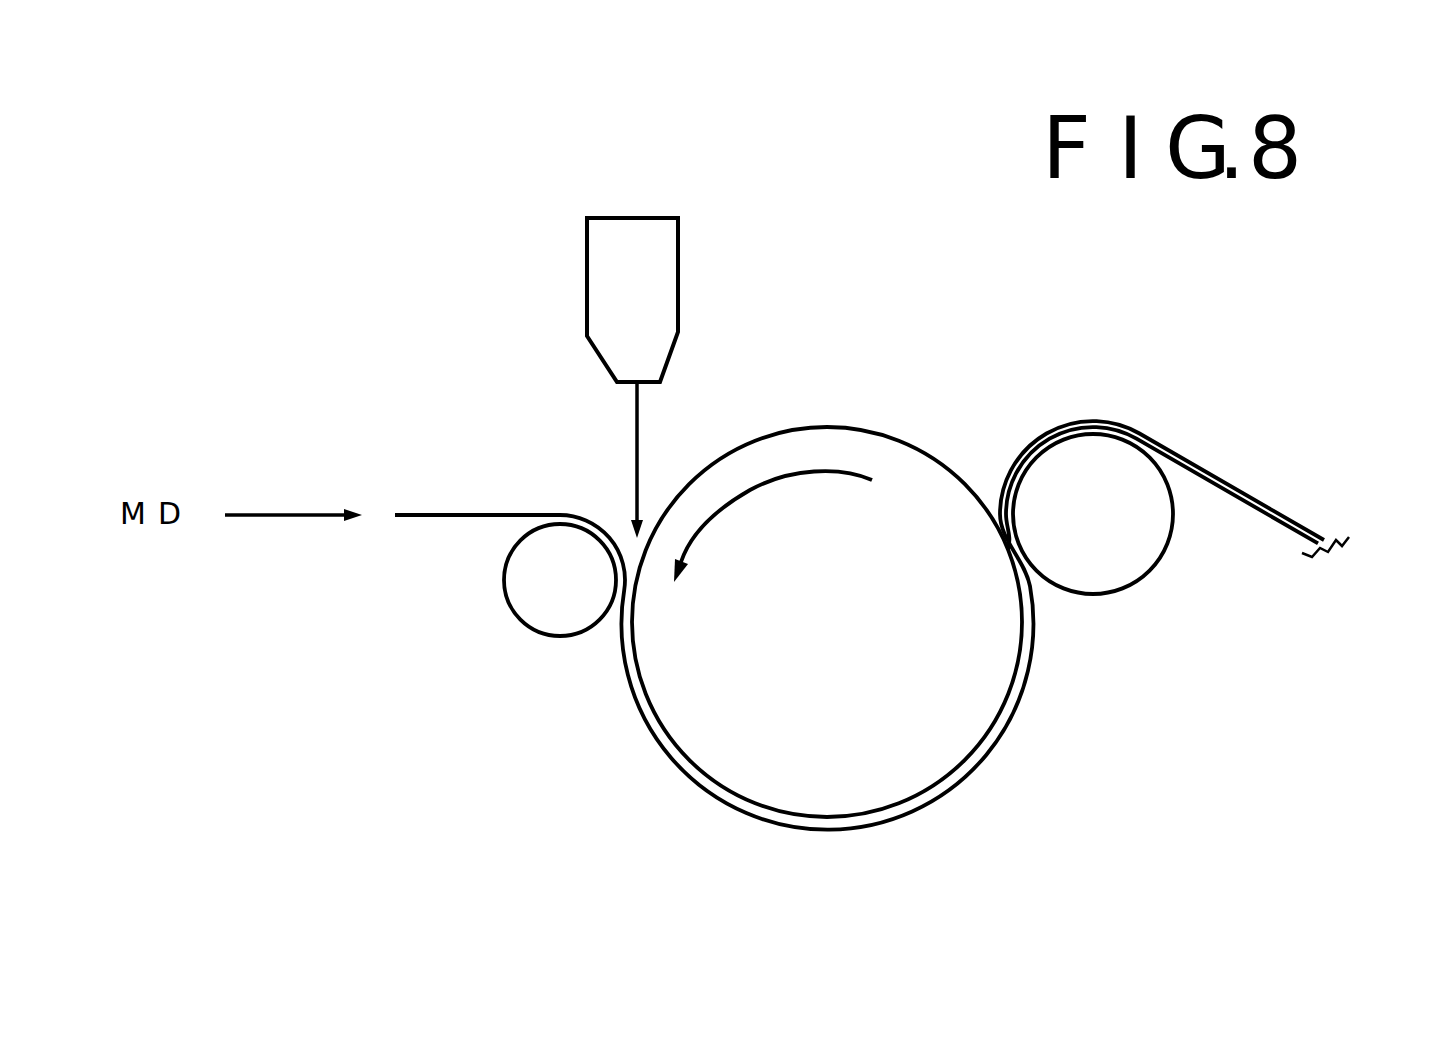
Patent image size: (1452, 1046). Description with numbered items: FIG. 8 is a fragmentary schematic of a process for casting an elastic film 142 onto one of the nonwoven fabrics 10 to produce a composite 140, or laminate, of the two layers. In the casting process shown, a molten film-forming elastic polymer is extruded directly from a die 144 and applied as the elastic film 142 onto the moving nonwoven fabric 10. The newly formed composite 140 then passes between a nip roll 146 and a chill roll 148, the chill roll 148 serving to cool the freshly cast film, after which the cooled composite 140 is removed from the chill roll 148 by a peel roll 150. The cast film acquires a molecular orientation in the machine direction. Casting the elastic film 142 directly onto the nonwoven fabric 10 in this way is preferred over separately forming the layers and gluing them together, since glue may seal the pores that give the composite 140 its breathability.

The nonwoven fabric 10 is at (498, 510).
The composite 140 is at (1287, 515).
The elastic film 142 is at (642, 435).
The die 144 is at (652, 228).
The nip roll 146 is at (540, 615).
The chill roll 148 is at (917, 745).
The peel roll 150 is at (1127, 545).